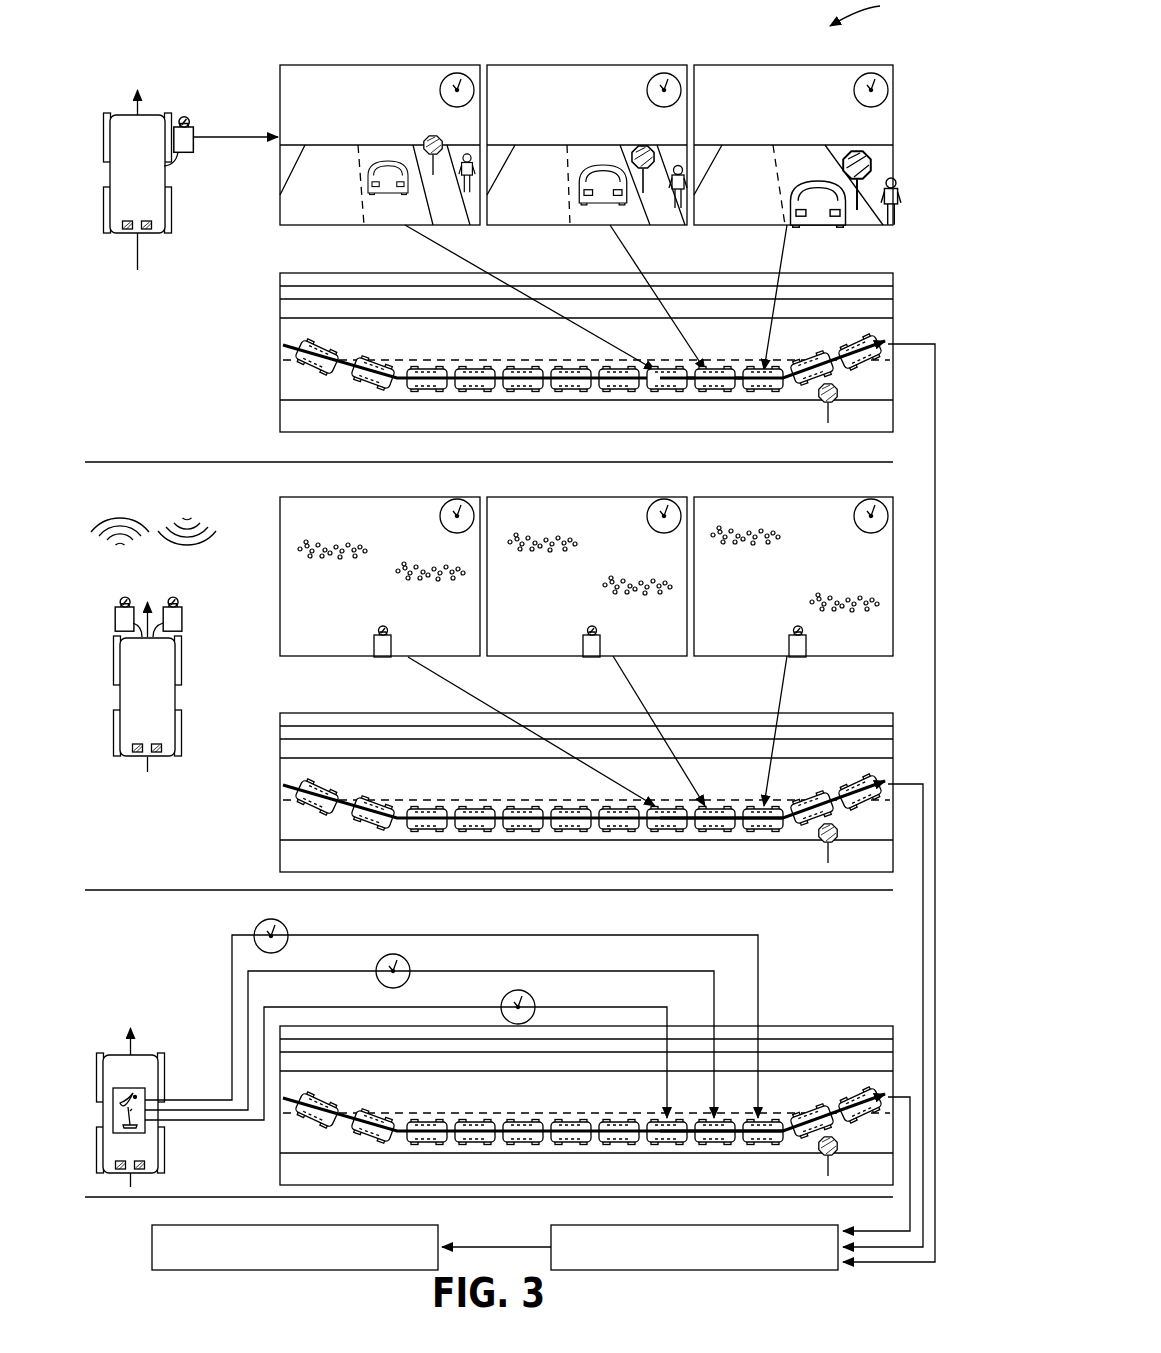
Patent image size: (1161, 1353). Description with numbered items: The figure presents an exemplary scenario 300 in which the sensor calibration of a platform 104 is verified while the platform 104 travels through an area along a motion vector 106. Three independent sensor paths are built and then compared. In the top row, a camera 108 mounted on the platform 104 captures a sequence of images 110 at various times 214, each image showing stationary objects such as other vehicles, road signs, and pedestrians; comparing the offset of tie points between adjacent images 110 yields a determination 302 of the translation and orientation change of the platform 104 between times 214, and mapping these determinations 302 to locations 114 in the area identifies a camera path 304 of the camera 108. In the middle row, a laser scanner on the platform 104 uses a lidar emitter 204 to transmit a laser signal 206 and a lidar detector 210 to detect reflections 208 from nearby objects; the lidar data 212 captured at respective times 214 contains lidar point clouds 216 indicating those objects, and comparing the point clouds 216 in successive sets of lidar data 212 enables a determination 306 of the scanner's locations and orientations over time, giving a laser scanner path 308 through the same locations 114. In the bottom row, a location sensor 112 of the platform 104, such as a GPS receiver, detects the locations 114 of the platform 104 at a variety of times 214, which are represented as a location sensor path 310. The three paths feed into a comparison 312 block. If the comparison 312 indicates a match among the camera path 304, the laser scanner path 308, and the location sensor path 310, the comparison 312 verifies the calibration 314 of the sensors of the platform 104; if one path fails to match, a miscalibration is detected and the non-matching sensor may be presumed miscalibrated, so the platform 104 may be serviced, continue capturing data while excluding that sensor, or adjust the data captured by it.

The exemplary scenario 300 is at (877, 13).
The platform 104 is at (152, 112).
The motion vector 106 is at (142, 82).
The camera 108 is at (191, 120).
The image 110 is at (357, 65).
The location sensor 112 is at (128, 1088).
The location 114 is at (683, 773).
The lidar emitter 204 is at (126, 600).
The laser signal 206 is at (122, 512).
The reflections 208 is at (188, 512).
The lidar detector 210 is at (176, 600).
The lidar data 212 is at (355, 497).
The time 214 is at (450, 74).
The lidar point cloud 216 is at (360, 538).
The determination 302 is at (467, 261).
The camera path 304 is at (347, 358).
The determination 306 is at (480, 700).
The laser scanner path 308 is at (347, 798).
The location sensor path 310 is at (347, 1111).
The comparison 312 is at (630, 1225).
The calibration 314 is at (230, 1225).